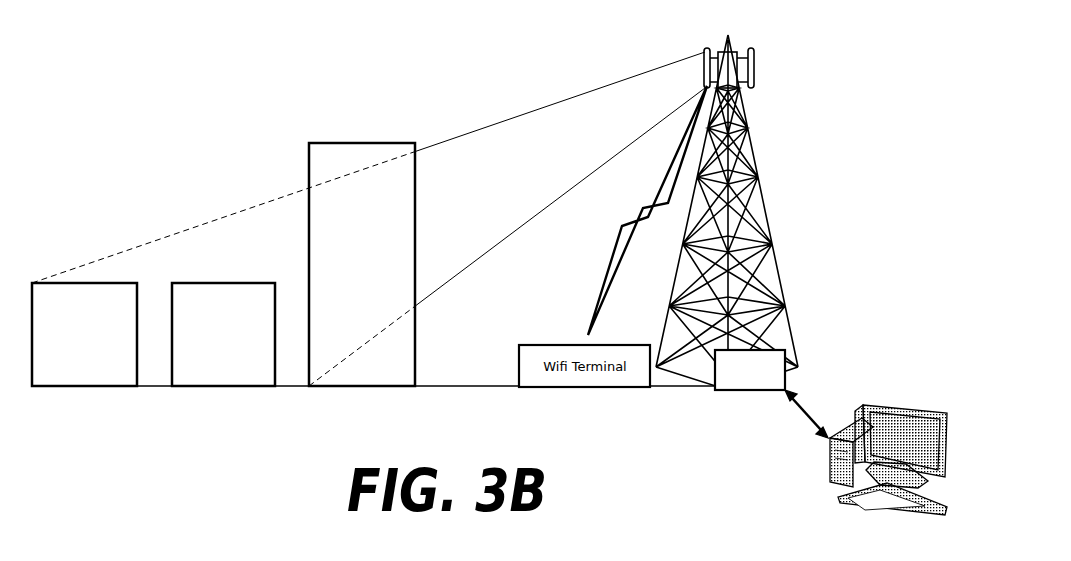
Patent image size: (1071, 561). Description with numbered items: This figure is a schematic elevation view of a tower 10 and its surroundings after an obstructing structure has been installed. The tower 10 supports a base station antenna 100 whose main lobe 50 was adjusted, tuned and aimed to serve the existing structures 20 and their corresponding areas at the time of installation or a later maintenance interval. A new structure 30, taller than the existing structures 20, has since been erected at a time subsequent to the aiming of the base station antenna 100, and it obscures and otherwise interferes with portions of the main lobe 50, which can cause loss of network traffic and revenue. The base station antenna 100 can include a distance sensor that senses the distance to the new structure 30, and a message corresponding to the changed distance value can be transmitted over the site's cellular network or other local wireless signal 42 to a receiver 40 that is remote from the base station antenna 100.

The tower 10 is at (781, 283).
The existing structures 20 is at (85, 387).
The new structure 30 is at (328, 142).
The receiver 40 is at (870, 508).
The local wireless signal 42 is at (616, 276).
The main lobe 50 is at (267, 222).
The base station antenna 100 is at (705, 53).